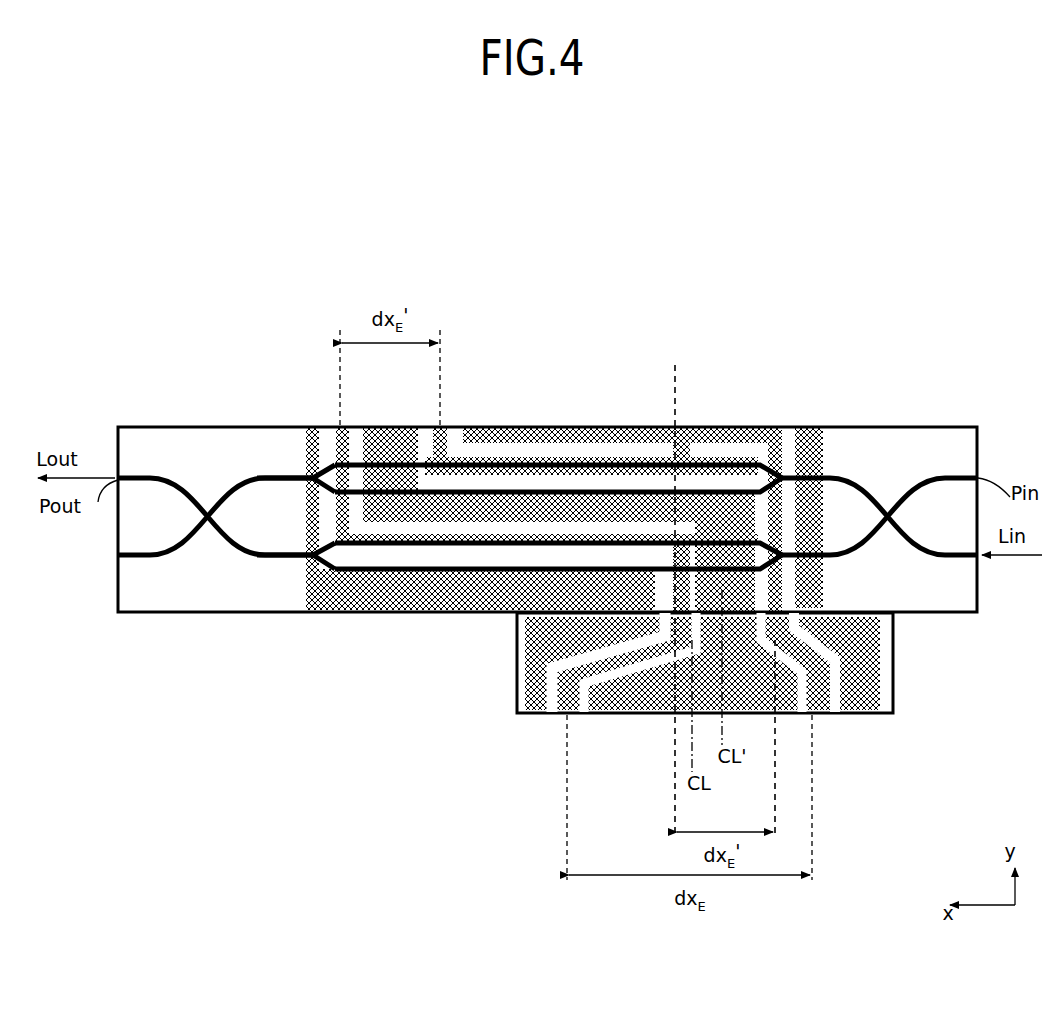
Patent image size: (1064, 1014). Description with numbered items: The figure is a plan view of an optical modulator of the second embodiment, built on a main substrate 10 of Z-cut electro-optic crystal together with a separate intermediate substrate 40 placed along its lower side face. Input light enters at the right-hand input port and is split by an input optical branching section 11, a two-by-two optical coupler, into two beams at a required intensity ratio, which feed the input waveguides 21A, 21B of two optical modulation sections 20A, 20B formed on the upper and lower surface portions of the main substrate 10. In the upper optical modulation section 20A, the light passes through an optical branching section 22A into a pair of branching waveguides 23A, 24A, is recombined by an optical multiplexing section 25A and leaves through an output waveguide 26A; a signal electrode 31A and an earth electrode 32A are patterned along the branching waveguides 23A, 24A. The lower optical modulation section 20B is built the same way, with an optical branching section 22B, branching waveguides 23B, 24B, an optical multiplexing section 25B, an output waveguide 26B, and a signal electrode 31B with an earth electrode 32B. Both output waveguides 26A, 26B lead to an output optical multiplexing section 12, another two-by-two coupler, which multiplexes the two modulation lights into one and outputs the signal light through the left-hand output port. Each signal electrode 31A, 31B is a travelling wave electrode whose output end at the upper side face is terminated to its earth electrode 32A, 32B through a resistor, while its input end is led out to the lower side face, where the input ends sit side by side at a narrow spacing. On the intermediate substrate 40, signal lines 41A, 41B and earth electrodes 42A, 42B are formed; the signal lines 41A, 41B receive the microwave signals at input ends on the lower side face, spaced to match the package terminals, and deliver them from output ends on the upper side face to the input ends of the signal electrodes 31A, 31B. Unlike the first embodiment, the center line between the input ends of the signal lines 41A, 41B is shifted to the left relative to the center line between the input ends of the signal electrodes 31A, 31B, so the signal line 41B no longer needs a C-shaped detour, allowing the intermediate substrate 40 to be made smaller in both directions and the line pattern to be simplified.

The main substrate 10 is at (143, 613).
The input optical branching section 11 is at (887, 500).
The output optical multiplexing section 12 is at (205, 527).
The optical modulation section 20A is at (591, 387).
The optical modulation section 20B is at (531, 656).
The input waveguide 21A is at (809, 472).
The input waveguide 21B is at (817, 497).
The optical branching section 22A is at (778, 465).
The optical branching section 22B is at (782, 500).
The branching waveguide 23A is at (503, 463).
The branching waveguide 24A is at (481, 490).
The branching waveguide 23B is at (372, 573).
The branching waveguide 24B is at (344, 549).
The optical multiplexing section 25A is at (305, 458).
The optical multiplexing section 25B is at (312, 571).
The output waveguide 26A is at (272, 467).
The output waveguide 26B is at (270, 562).
The signal electrode 31A is at (548, 472).
The earth electrode 32A is at (583, 428).
The signal electrode 31B is at (400, 546).
The earth electrode 32B is at (421, 610).
The intermediate substrate 40 is at (700, 695).
The signal line 41A is at (818, 700).
The signal line 41B is at (557, 716).
The earth electrode 42A is at (805, 688).
The earth electrode 42B is at (543, 635).